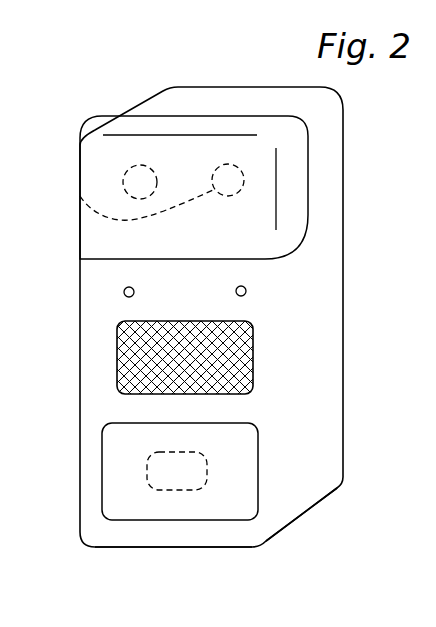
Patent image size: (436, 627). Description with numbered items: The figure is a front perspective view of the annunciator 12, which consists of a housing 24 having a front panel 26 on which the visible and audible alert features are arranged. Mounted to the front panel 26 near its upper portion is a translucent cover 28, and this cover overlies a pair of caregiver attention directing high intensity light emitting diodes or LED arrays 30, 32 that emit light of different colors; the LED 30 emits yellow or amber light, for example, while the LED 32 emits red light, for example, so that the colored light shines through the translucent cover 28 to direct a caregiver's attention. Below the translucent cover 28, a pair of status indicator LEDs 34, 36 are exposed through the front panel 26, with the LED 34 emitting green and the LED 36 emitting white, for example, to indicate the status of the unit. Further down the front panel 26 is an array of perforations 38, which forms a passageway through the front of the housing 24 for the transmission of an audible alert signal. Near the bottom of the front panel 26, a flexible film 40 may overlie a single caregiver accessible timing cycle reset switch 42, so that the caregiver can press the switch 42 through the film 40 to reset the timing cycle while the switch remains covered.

The annunciator 12 is at (222, 92).
The housing 24 is at (300, 505).
The front panel 26 is at (255, 532).
The translucent cover 28 is at (102, 120).
The high intensity light emitting diode 30 is at (125, 173).
The high intensity light emitting diode 32 is at (80, 196).
The status indicator LED 34 is at (124, 293).
The status indicator LED 36 is at (247, 292).
The array of perforations 38 is at (238, 356).
The flexible film 40 is at (242, 473).
The timing cycle reset switch 42 is at (170, 492).